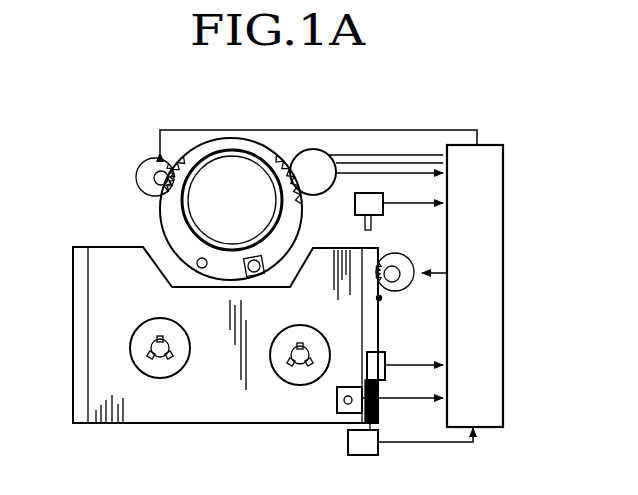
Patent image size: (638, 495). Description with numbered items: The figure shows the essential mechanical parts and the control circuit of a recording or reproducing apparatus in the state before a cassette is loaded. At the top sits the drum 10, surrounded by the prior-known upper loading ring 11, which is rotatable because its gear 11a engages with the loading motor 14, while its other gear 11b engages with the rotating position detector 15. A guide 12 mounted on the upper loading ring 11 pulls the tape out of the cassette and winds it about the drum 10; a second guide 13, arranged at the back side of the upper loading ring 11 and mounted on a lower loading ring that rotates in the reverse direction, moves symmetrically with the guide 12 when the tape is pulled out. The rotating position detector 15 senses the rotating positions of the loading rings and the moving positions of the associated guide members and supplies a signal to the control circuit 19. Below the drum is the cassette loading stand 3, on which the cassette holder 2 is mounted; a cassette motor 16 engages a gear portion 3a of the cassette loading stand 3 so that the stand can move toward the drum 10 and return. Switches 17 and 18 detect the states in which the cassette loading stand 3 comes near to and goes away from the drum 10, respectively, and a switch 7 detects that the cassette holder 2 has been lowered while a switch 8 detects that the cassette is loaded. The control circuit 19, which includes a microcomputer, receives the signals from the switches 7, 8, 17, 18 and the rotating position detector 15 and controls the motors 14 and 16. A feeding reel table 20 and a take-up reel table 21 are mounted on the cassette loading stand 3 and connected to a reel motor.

The cassette holder 2 is at (140, 415).
The cassette loading stand 3 is at (397, 341).
The frame pivot 3a is at (381, 300).
The switch 7 is at (385, 369).
The switch 8 is at (341, 413).
The drum 10 is at (243, 170).
The upper loading ring 11 is at (226, 140).
The gear 11a is at (170, 196).
The gear 11b is at (294, 202).
The guide 12 is at (204, 268).
The second guide 13 is at (257, 276).
The loading motor 14 is at (146, 176).
The rotating position detector 15 is at (313, 150).
The cassette motor 16 is at (401, 262).
The switch 17 is at (368, 192).
The switch 18 is at (378, 452).
The control circuit 19 is at (503, 216).
The feeding reel table 20 is at (163, 357).
The take-up reel table 21 is at (298, 360).